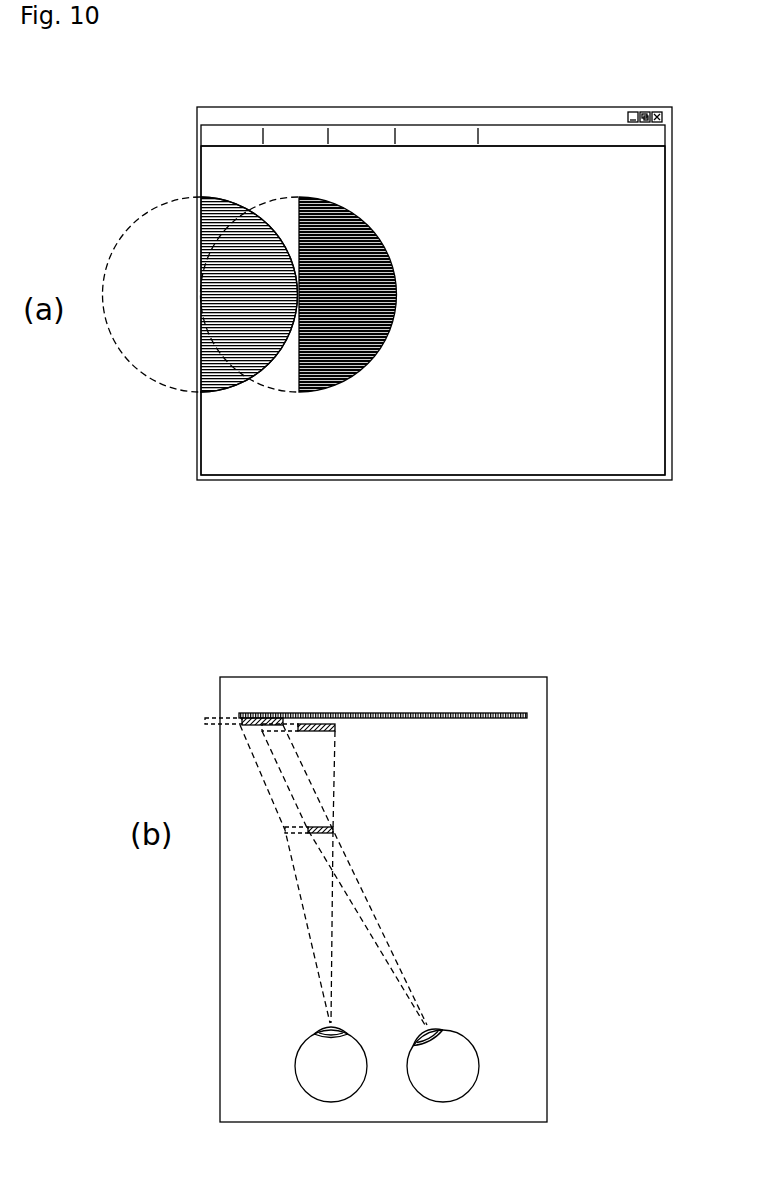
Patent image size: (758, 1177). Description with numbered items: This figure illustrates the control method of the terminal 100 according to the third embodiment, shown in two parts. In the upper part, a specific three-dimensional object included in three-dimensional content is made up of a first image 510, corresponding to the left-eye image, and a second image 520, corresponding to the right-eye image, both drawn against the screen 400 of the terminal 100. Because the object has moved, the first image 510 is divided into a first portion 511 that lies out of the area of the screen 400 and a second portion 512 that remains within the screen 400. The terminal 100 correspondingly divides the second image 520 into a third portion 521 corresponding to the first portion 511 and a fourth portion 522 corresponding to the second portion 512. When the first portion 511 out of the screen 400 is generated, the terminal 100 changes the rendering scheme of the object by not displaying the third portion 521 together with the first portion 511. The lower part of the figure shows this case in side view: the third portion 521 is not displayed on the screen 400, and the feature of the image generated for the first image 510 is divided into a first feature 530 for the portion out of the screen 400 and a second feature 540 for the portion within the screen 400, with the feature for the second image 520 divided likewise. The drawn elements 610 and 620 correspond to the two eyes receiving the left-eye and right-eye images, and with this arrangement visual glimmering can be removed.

The terminal 100 is at (517, 107).
The screen 400 is at (580, 183).
The first image 510 is at (200, 461).
The first portion 511 is at (153, 392).
The second portion 512 is at (225, 392).
The second image 520 is at (299, 464).
The third portion 521 is at (270, 392).
The fourth portion 522 is at (322, 392).
The first feature 530 is at (285, 830).
The second feature 540 is at (335, 830).
The left eye 610 is at (312, 1088).
The right eye 620 is at (455, 1088).